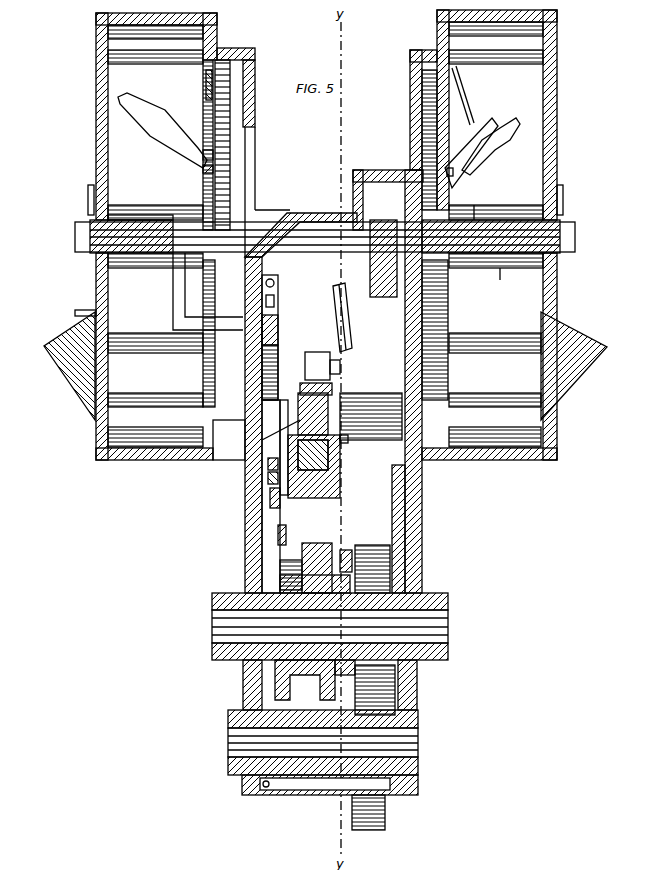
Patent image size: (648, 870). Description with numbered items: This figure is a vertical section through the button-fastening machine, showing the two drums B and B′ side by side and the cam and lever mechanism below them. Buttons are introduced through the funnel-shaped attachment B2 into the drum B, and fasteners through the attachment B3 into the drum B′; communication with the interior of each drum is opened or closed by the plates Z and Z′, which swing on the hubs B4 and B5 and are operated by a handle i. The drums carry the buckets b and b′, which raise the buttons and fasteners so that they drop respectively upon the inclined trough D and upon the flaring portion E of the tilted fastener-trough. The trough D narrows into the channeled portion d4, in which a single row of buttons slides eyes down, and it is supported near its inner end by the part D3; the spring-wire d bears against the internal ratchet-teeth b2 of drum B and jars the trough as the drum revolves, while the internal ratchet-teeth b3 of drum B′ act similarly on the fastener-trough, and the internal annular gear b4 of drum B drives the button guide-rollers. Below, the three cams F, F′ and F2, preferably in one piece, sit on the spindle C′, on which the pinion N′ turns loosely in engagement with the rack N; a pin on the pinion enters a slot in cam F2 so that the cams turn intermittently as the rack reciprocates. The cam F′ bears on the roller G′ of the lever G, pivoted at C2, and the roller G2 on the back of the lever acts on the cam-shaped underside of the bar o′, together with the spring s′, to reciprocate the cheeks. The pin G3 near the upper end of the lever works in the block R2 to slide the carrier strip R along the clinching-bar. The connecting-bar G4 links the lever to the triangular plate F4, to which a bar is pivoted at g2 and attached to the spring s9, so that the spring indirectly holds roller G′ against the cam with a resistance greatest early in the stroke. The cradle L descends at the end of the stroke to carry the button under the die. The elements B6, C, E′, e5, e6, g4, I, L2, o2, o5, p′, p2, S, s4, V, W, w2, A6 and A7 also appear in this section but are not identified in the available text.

The drum B is at (193, 236).
The drum B′ is at (483, 235).
The buckets b is at (155, 236).
The buckets b′ is at (325, 234).
The internal ratchet-teeth b2 is at (207, 197).
The internal ratchet-teeth b3 is at (440, 294).
The internal annular gear b4 is at (228, 145).
The funnel-shaped attachment B2 is at (69, 366).
The funnel-shaped attachment B3 is at (580, 375).
The hub B4 is at (130, 212).
The hub B5 is at (507, 281).
The bearing B6 is at (475, 205).
The main shaft C is at (328, 245).
The spindle C′ is at (330, 626).
The pivot C2 is at (323, 742).
The trough D is at (162, 130).
The spring-wire d is at (205, 83).
The channeled portion d4 is at (214, 158).
The supporting part D3 is at (214, 170).
The fastener-trough E is at (491, 146).
The lever arm E′ is at (471, 153).
The rod e5 is at (462, 85).
The pin e6 is at (457, 176).
The cam F is at (315, 559).
The cam F′ is at (305, 680).
The cam F2 is at (345, 675).
The triangular plate F4 is at (270, 498).
The lever G is at (275, 525).
The roller G′ is at (280, 568).
The roller G2 is at (229, 440).
The pin G3 is at (341, 372).
The connecting-bar G4 is at (287, 535).
The pivot g2 is at (262, 472).
The pin g4 is at (262, 486).
The hub I is at (388, 233).
The handle i is at (78, 312).
The cradle L is at (343, 482).
The rod L2 is at (312, 498).
The rack N is at (372, 545).
The pinion N′ is at (367, 655).
The bar o′ is at (279, 358).
The block o2 is at (279, 340).
The pin o5 is at (275, 290).
The pin p′ is at (89, 198).
The pin p2 is at (561, 192).
The sliding carrier strip R is at (333, 392).
The block R2 is at (317, 366).
The spring S is at (346, 328).
The spring s′ is at (275, 318).
The pin s4 is at (346, 450).
The spring s9 is at (325, 782).
The wall V is at (392, 500).
The lever W is at (173, 290).
The key w2 is at (346, 550).
The plate Z is at (122, 289).
The plate Z′ is at (543, 312).
The gear A6 is at (366, 432).
The rod A7 is at (262, 450).